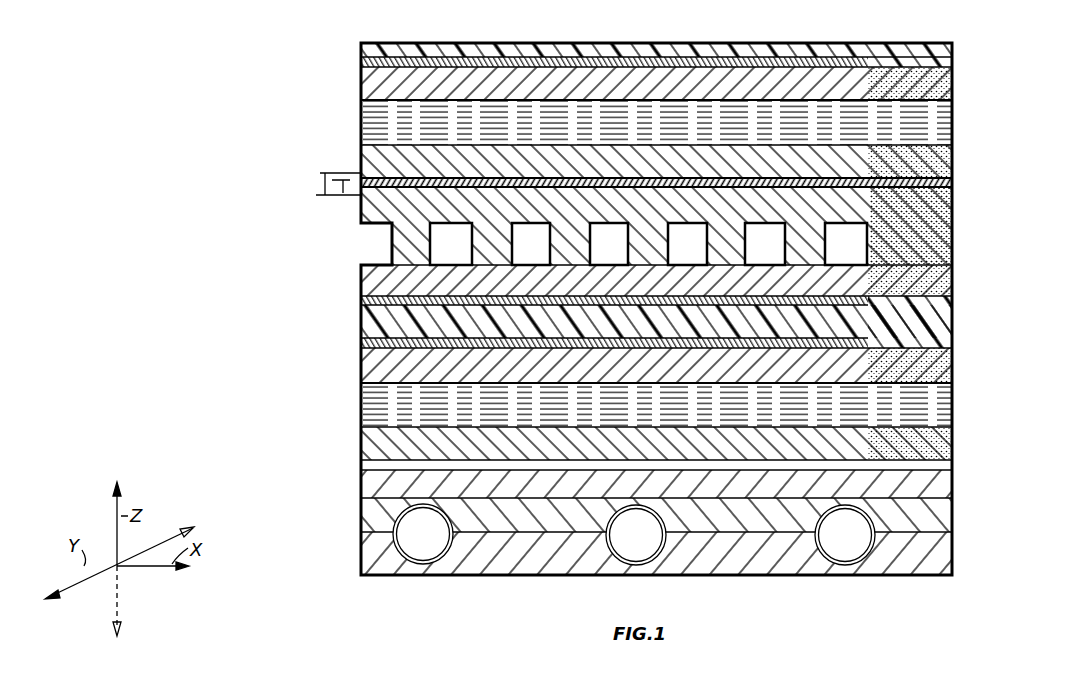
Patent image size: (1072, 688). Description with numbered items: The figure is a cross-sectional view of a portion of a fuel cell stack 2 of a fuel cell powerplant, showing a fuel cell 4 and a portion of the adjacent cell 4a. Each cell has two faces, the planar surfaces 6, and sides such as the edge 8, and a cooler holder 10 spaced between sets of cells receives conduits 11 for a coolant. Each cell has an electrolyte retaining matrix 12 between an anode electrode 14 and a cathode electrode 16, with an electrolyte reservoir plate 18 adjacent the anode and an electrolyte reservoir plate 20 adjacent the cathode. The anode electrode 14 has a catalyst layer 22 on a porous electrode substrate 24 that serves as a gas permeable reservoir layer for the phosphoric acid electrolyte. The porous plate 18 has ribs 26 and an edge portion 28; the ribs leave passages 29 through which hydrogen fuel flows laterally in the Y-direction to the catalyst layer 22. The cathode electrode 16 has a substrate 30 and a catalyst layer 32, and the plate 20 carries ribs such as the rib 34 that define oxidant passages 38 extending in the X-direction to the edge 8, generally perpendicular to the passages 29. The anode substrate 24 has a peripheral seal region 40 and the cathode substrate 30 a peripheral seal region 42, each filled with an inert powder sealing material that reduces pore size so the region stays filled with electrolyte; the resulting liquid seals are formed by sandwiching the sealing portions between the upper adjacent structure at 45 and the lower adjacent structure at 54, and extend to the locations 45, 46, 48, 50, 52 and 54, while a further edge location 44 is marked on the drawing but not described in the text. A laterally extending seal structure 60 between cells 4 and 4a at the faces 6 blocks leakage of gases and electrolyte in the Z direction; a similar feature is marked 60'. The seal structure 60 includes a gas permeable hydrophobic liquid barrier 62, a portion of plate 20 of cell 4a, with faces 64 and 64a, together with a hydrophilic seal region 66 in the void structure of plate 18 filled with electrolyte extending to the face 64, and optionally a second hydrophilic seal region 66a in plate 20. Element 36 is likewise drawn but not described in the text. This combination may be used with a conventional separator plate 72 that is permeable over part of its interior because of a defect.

The fuel cell stack 2 is at (255, 339).
The fuel cell 4 is at (355, 465).
The adjacent cell 4a is at (284, 40).
The planar surfaces 6 is at (366, 488).
The edge 8 is at (952, 405).
The cooler holder 10 is at (357, 498).
The conduits 11 is at (413, 547).
The electrolyte retaining matrix 12 is at (548, 49).
The anode electrode 14 is at (355, 267).
The cathode electrode 16 is at (355, 100).
The electrolyte reservoir plate 18 is at (361, 212).
The electrolyte reservoir plate 20 is at (361, 452).
The catalyst layer 22 is at (780, 250).
The electrode substrate 24 is at (836, 260).
The ribs 26 is at (703, 245).
The edge portion 28 is at (905, 258).
The passages 29 is at (452, 230).
The substrate 30 is at (826, 375).
The catalyst layer 32 is at (389, 62).
The rib 34 is at (361, 122).
The terminal 36 is at (927, 430).
The passages 38 is at (361, 109).
The peripheral seal region 40 is at (952, 275).
The peripheral seal region 42 is at (953, 367).
The edge portion 44 is at (952, 323).
The location of liquid seal 45 is at (955, 192).
The location of liquid seal 46 is at (952, 279).
The location of liquid seal 48 is at (953, 290).
The location of liquid seal 50 is at (953, 360).
The location of liquid seal 52 is at (952, 377).
The location of liquid seal 54 is at (957, 460).
The seal structure 60 is at (338, 166).
The contact 60' is at (302, 161).
The hydrophobic liquid barrier 62 is at (952, 185).
The face 64 is at (616, 205).
The face 64a is at (611, 186).
The hydrophilic seal region 66 is at (532, 218).
The second hydrophilic seal region 66a is at (555, 178).
The separator plate 72 is at (365, 488).